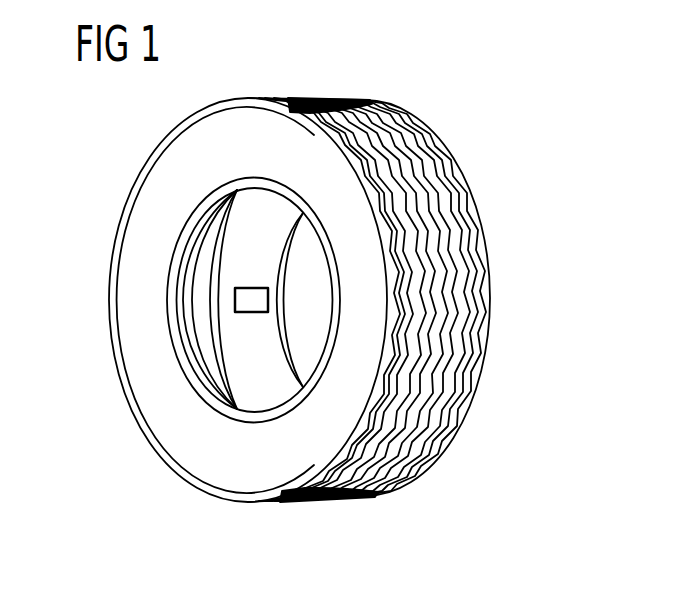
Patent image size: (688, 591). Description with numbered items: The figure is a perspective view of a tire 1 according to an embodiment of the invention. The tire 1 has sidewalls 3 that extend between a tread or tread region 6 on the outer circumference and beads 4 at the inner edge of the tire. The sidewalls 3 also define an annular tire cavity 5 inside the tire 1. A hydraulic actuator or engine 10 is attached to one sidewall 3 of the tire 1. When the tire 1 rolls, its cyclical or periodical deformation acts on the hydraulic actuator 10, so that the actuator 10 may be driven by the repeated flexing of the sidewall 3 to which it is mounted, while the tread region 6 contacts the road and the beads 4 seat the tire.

The tire 1 is at (498, 182).
The sidewall 3 is at (158, 217).
The bead 4 is at (200, 384).
The annular tire cavity 5 is at (308, 322).
The tread region 6 is at (460, 368).
The hydraulic actuator 10 is at (252, 300).